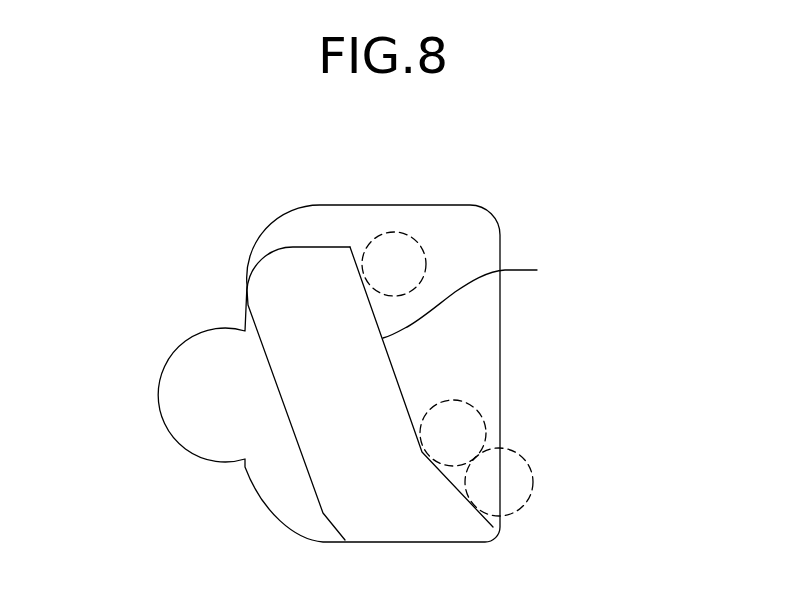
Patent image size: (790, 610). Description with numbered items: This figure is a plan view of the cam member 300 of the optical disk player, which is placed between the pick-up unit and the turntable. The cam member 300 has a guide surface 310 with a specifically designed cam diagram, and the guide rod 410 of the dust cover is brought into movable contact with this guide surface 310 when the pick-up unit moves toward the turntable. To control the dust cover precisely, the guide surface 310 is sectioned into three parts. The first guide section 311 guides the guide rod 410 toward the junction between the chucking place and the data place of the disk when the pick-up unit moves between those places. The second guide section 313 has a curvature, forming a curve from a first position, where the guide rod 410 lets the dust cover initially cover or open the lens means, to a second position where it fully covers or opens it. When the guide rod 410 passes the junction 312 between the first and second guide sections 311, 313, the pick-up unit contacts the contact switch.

The cam member 300 is at (218, 280).
The guide surface 310 is at (598, 270).
The first guide section 311 is at (465, 490).
The junction 312 is at (486, 299).
The second guide section 313 is at (423, 452).
The guide rod 410 is at (422, 250).